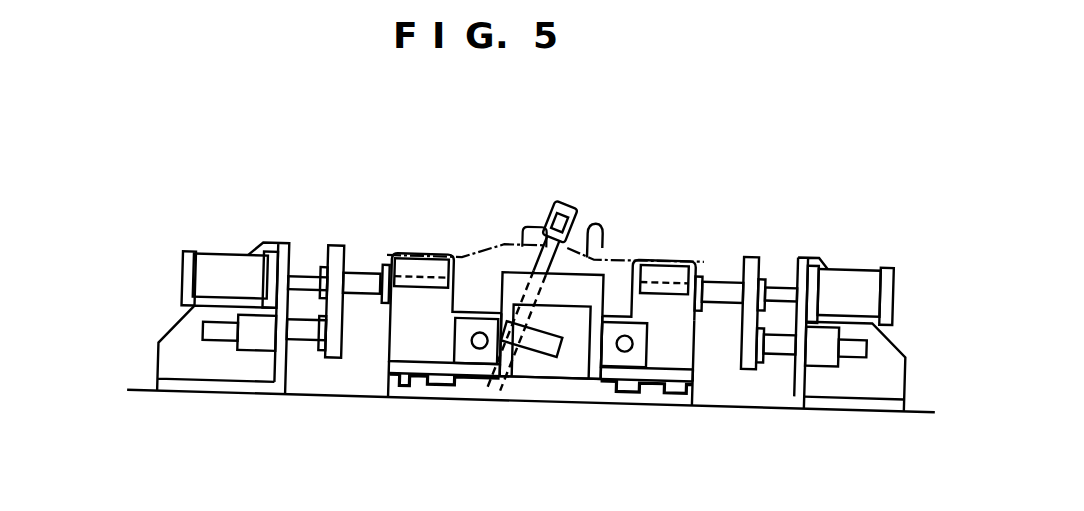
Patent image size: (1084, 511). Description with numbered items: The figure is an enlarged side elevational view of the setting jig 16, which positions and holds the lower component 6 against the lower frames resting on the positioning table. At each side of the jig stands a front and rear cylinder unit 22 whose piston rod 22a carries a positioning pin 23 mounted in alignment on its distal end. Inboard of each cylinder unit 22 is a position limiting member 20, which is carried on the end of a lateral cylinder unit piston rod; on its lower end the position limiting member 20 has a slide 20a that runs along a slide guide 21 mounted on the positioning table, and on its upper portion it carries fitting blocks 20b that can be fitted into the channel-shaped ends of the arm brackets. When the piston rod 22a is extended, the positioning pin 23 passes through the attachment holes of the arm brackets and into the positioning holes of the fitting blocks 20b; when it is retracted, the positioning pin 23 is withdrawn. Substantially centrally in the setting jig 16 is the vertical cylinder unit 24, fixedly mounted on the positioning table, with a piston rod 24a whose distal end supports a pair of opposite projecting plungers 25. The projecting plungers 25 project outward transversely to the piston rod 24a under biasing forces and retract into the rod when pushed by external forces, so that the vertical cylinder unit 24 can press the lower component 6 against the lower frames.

The lower component 6 is at (503, 243).
The setting jig 16 is at (811, 185).
The position limiting member 20 is at (403, 333).
The slide 20a is at (399, 395).
The fitting block 20b is at (426, 258).
The slide guide 21 is at (468, 393).
The front and rear cylinder unit 22 is at (224, 266).
The piston rod 22a is at (308, 275).
The positioning pin 23 is at (412, 256).
The vertical cylinder unit 24 is at (548, 378).
The piston rod 24a is at (590, 247).
The projecting plunger 25 is at (562, 206).